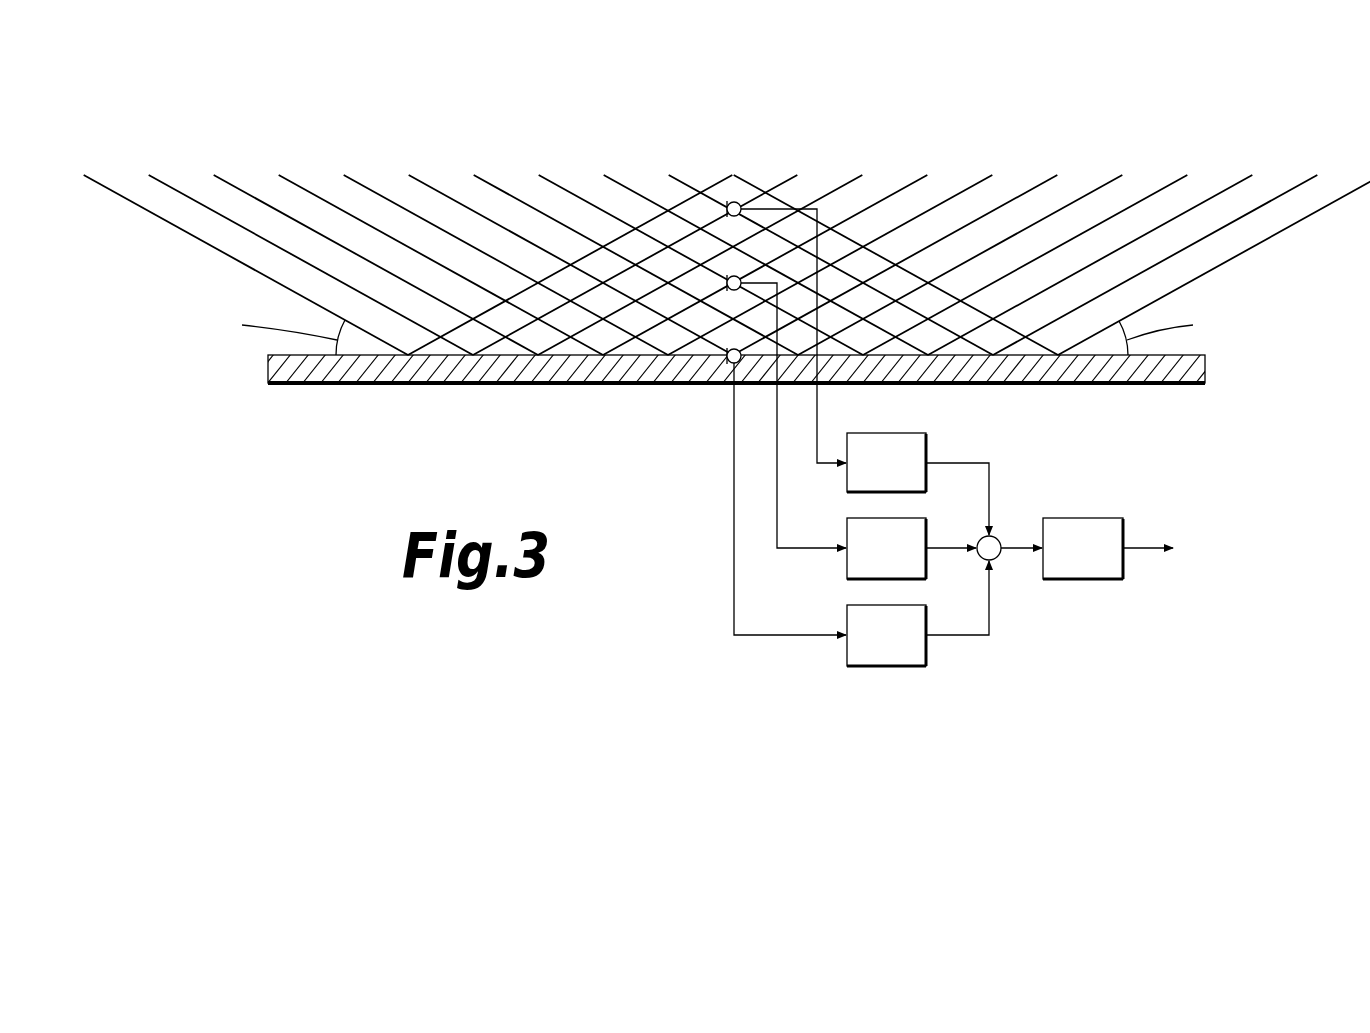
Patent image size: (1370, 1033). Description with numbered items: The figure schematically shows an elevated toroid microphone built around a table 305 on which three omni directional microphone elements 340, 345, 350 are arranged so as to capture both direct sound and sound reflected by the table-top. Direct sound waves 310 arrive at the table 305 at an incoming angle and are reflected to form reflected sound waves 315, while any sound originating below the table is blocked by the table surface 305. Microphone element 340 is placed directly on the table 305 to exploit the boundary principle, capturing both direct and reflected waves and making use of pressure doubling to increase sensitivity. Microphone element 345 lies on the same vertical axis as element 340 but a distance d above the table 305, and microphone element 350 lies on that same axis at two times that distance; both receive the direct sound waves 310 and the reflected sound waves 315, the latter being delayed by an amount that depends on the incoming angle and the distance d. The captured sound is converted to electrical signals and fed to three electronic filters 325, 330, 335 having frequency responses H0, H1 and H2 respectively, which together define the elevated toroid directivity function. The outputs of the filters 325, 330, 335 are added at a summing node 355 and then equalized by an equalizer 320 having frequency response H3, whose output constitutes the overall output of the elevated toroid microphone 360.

The table 305 is at (1167, 377).
The direct sound waves 310 is at (1348, 188).
The reflected sound waves 315 is at (100, 188).
The equalizer 320 is at (1082, 520).
The electronic filter 325 is at (848, 653).
The electronic filter 330 is at (848, 567).
The electronic filter 335 is at (848, 482).
The omni directional microphone element 340 is at (730, 364).
The omni directional microphone element 345 is at (732, 274).
The omni directional microphone element 350 is at (739, 203).
The summing node 355 is at (997, 553).
The overall output of the elevated toroid microphone 360 is at (1155, 553).